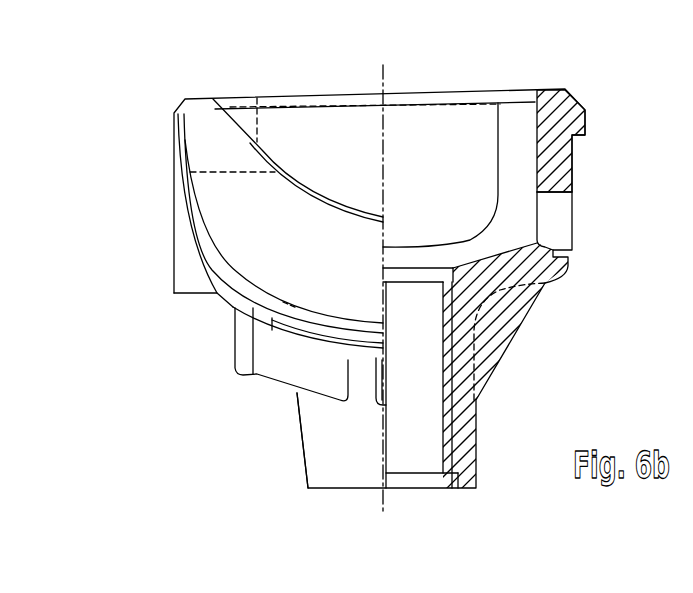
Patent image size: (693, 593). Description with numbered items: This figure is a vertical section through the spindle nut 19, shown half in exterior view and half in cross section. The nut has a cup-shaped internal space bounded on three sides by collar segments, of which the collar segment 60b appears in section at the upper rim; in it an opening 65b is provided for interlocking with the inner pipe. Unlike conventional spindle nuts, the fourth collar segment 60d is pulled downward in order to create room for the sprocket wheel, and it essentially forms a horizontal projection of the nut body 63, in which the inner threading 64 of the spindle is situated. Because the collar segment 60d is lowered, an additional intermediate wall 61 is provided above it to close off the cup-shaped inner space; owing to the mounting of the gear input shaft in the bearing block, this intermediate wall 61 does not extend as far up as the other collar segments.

The spindle nut 19 is at (305, 86).
The intermediate wall 61 is at (247, 205).
The collar segment 60b is at (557, 160).
The opening 65b is at (552, 215).
The collar segment 60d is at (233, 298).
The nut body 63 is at (460, 413).
The inner threading 64 is at (443, 430).